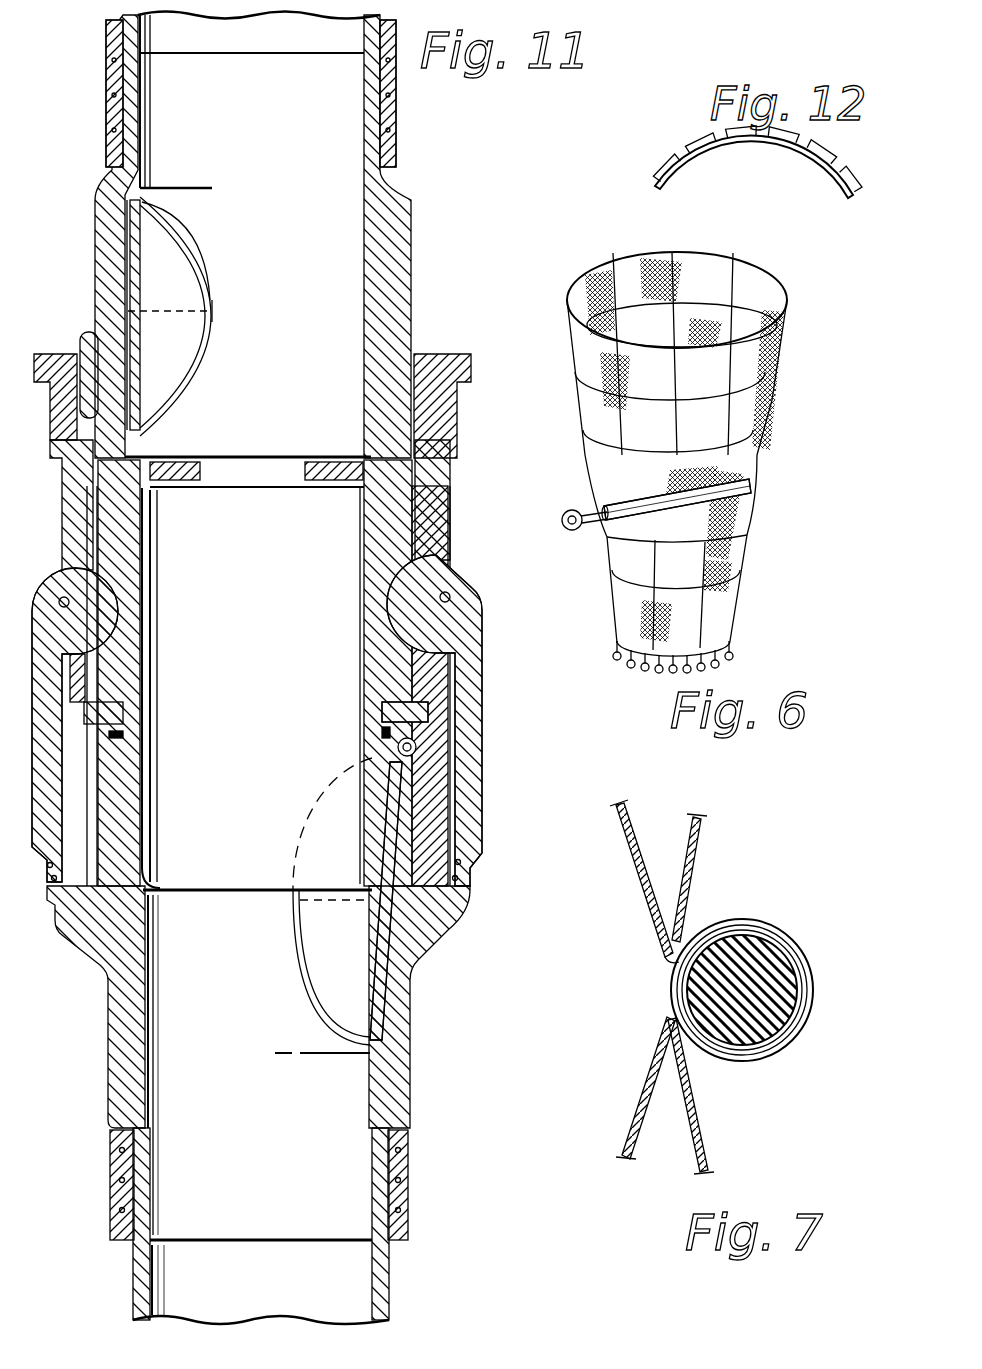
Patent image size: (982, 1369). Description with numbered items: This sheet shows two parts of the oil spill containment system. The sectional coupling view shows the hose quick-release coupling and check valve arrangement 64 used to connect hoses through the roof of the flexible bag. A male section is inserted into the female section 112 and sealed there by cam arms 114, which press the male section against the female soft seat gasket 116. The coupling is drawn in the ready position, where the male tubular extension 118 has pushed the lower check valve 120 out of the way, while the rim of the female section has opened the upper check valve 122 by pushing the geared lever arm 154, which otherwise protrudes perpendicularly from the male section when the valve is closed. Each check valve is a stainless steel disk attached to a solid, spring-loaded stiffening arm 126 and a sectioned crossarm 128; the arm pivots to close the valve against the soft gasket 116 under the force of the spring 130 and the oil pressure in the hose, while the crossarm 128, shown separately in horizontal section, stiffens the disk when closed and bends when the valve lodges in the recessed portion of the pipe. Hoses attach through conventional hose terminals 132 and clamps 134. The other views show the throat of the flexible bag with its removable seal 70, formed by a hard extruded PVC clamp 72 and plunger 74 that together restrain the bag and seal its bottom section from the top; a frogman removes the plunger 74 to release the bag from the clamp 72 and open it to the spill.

In FIG. 11, the coupling assembly 64 is at (462, 236).
In FIG. 11, the female soft seat gasket 116 is at (412, 287).
In FIG. 11, the upper check valve 122 is at (204, 378).
In FIG. 11, the stiffening arm 126 is at (150, 252).
In FIG. 11, the crossarm 128 is at (222, 286).
In FIG. 12, the crossarm 128 is at (712, 152).
In FIG. 11, the geared lever arm 154 is at (85, 336).
In FIG. 11, the female section 112 is at (430, 510).
In FIG. 11, the cam arms 114 is at (470, 680).
In FIG. 11, the male tubular extension 118 is at (135, 815).
In FIG. 11, the lower check valve 120 is at (300, 972).
In FIG. 11, the spring 130 is at (420, 780).
In FIG. 11, the hose terminals 132 is at (405, 1241).
In FIG. 11, the clamps 134 is at (412, 1178).
In FIG. 6, the removable seal 70 is at (772, 470).
In FIG. 7, the removable seal 70 is at (667, 978).
In FIG. 6, the clamp 72 is at (757, 492).
In FIG. 7, the clamp 72 is at (770, 928).
In FIG. 6, the plunger 74 is at (575, 532).
In FIG. 7, the plunger 74 is at (782, 1035).